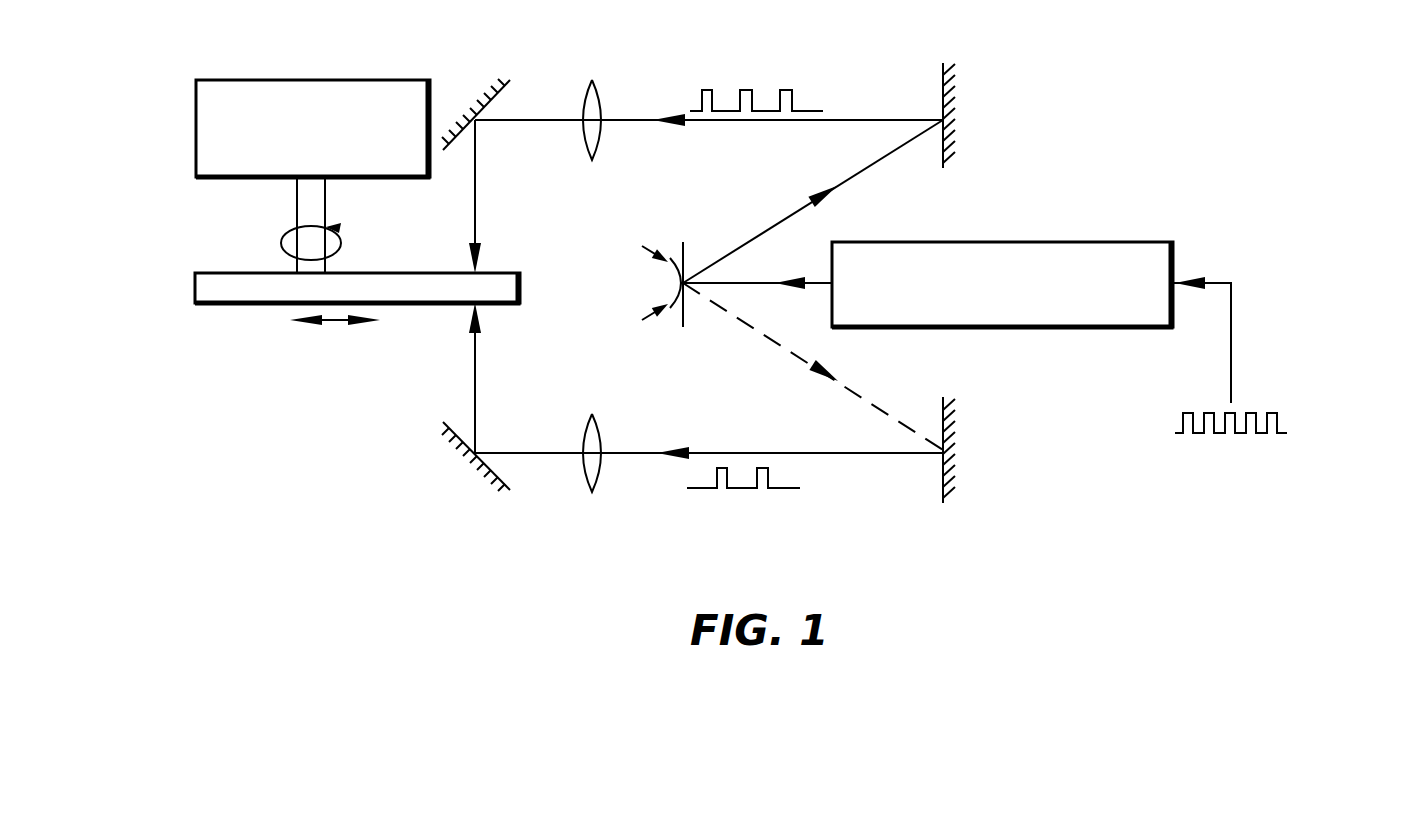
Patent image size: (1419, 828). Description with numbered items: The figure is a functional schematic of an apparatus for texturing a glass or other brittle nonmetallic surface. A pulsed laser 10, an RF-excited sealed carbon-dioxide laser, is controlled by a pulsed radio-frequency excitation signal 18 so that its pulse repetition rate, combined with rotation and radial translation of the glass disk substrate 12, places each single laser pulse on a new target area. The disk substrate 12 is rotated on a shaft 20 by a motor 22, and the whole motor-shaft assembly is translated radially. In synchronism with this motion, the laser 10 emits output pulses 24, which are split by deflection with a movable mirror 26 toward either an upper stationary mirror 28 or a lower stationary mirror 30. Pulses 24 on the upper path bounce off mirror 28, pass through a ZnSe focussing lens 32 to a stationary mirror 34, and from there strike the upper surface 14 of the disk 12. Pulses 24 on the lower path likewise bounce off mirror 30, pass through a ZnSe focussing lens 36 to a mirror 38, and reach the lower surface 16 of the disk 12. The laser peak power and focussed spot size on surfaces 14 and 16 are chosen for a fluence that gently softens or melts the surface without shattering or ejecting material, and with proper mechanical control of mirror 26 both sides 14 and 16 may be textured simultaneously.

The pulsed laser 10 is at (975, 327).
The glass disk substrate 12 is at (195, 288).
The upper surface 14 is at (490, 272).
The lower surface 16 is at (490, 305).
The pulsed radio-frequency excitation signal 18 is at (1232, 340).
The shaft 20 is at (297, 207).
The motor 22 is at (196, 143).
The output pulses 24 is at (755, 287).
The movable mirror 26 is at (681, 315).
The upper stationary mirror 28 is at (952, 103).
The lower stationary mirror 30 is at (950, 483).
The ZnSe focussing lens 32 is at (598, 90).
The stationary mirror 34 is at (503, 80).
The ZnSe focussing lens 36 is at (600, 480).
The mirror 38 is at (497, 480).